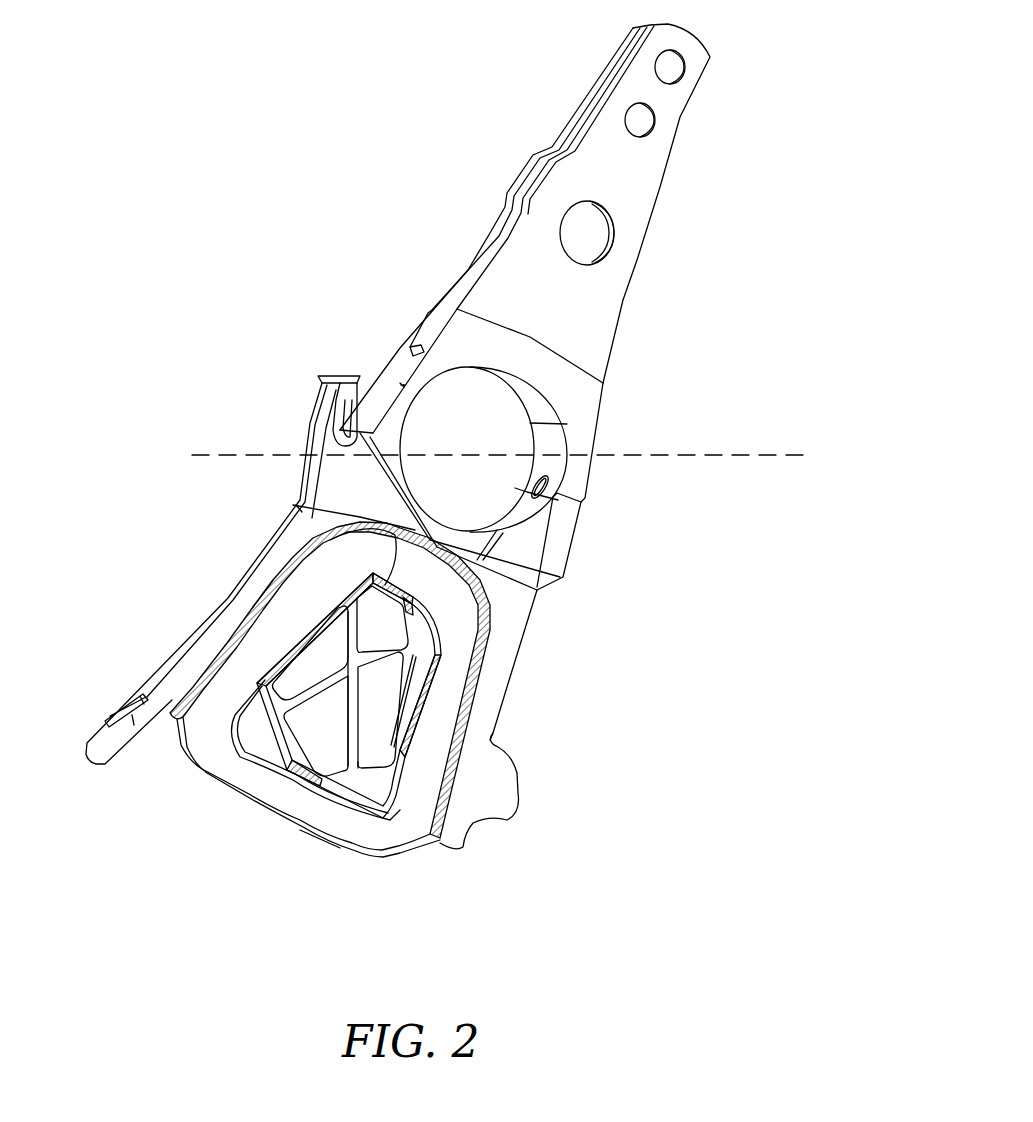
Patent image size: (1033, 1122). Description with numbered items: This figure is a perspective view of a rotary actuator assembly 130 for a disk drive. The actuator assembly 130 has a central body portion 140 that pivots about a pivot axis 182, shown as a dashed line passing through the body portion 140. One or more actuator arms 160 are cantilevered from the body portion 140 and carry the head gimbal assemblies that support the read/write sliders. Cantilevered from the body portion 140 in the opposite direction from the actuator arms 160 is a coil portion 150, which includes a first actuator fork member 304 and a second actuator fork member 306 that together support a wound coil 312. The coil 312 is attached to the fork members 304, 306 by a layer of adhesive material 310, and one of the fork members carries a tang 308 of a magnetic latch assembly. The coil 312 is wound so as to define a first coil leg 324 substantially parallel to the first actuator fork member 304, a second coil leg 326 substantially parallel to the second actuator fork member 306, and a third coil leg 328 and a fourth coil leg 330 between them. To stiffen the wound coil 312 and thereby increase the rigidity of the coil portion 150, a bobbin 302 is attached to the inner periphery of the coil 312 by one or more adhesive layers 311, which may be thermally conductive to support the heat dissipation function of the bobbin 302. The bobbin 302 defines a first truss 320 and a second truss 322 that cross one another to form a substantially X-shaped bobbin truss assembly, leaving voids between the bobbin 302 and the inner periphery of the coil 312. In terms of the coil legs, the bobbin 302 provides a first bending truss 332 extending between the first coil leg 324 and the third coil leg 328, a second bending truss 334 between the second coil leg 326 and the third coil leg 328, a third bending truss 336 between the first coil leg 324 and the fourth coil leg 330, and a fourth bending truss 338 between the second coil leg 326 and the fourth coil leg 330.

The actuator assembly 130 is at (162, 544).
The body portion 140 is at (583, 448).
The coil portion 150 is at (548, 624).
The actuator arm 160 is at (497, 234).
The pivot axis 182 is at (706, 461).
The bobbin 302 is at (352, 722).
The first actuator fork member 304 is at (487, 737).
The second actuator fork member 306 is at (207, 637).
The tang 308 is at (120, 703).
The layer of adhesive material 310 is at (277, 580).
The adhesive layer 311 is at (268, 670).
The coil 312 is at (330, 823).
The first truss 320 is at (293, 717).
The second truss 322 is at (365, 720).
The first coil leg 324 is at (453, 687).
The second coil leg 326 is at (273, 617).
The third coil leg 328 is at (263, 787).
The fourth coil leg 330 is at (295, 506).
The first bending truss 332 is at (377, 784).
The second bending truss 334 is at (282, 737).
The third bending truss 336 is at (420, 637).
The fourth bending truss 338 is at (360, 595).